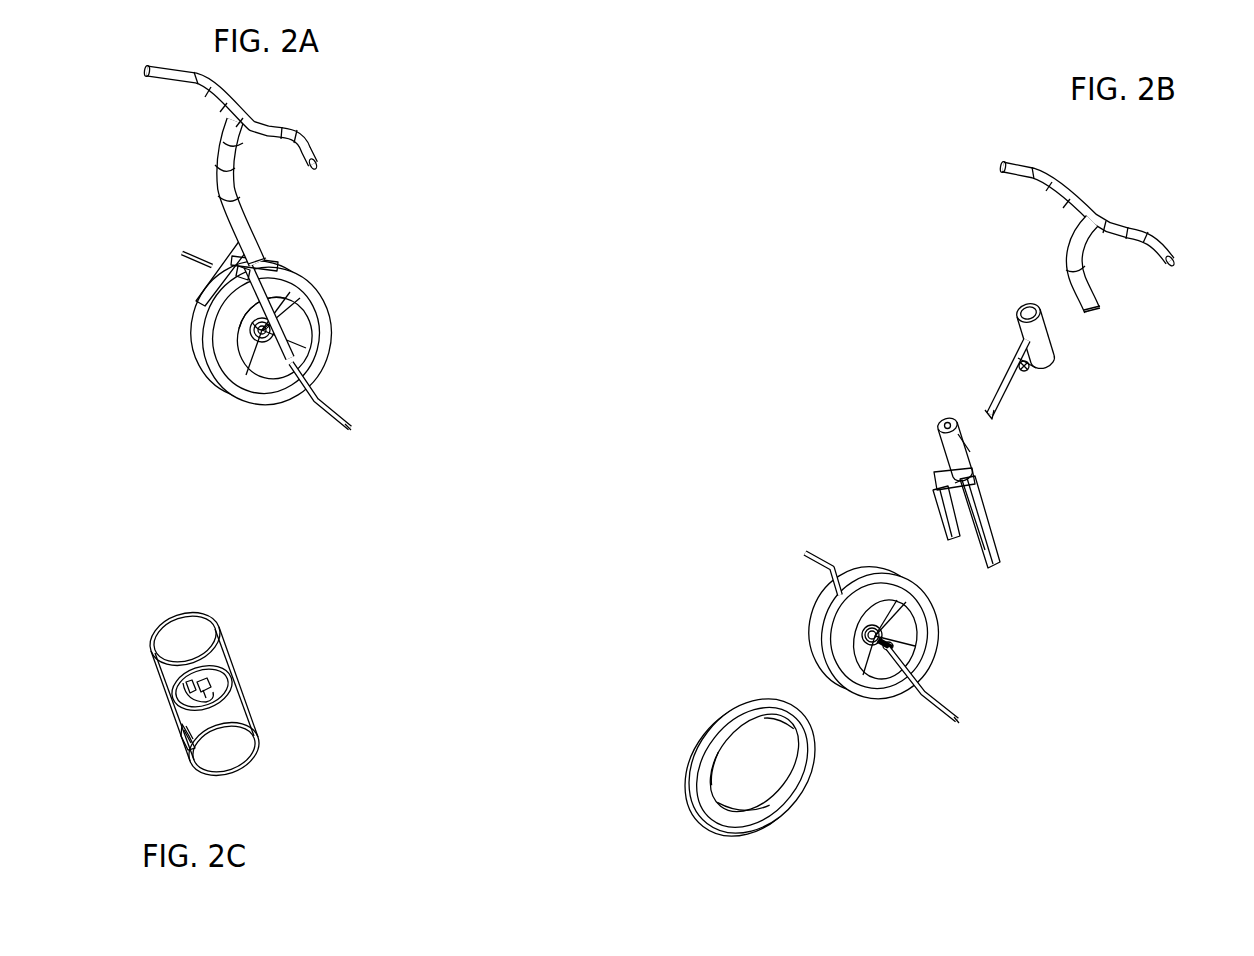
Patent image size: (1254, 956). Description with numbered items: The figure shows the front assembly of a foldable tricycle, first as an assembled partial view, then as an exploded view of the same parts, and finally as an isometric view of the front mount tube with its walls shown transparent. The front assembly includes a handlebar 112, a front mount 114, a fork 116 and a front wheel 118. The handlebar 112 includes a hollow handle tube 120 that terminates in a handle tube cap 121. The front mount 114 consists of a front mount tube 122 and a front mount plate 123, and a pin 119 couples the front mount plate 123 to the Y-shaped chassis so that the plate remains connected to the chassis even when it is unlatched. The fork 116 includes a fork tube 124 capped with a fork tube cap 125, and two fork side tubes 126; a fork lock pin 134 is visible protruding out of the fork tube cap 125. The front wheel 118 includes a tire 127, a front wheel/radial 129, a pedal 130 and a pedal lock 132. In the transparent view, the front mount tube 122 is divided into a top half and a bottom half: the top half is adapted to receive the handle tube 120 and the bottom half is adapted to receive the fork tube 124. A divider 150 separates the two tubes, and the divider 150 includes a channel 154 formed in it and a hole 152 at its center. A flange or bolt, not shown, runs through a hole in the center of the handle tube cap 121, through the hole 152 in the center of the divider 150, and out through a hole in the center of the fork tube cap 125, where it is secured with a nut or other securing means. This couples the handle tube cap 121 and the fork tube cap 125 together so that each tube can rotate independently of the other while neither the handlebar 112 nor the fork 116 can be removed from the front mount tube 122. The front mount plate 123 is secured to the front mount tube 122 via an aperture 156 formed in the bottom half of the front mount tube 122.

In FIG. 2A, the handlebar 112 is at (265, 128).
In FIG. 2B, the handlebar 112 is at (1000, 167).
In FIG. 2A, the front mount 114 is at (247, 223).
In FIG. 2A, the fork 116 is at (307, 300).
In FIG. 2A, the front wheel 118 is at (307, 333).
In FIG. 2B, the pin 119 is at (1015, 362).
In FIG. 2B, the handle tube 120 is at (1070, 260).
In FIG. 2B, the handle tube cap 121 is at (1103, 308).
In FIG. 2B, the front mount tube 122 is at (1017, 327).
In FIG. 2C, the front mount tube 122 is at (212, 705).
In FIG. 2B, the front mount plate 123 is at (1015, 387).
In FIG. 2B, the fork tube 124 is at (955, 442).
In FIG. 2B, the fork tube cap 125 is at (955, 427).
In FIG. 2B, the fork side tubes 126 is at (950, 538).
In FIG. 2B, the tire 127 is at (737, 712).
In FIG. 2B, the front wheel/radial 129 is at (927, 615).
In FIG. 2B, the pedal 130 is at (957, 712).
In FIG. 2B, the pedal lock 132 is at (887, 635).
In FIG. 2B, the fork lock pin 134 is at (940, 415).
In FIG. 2C, the divider 150 is at (215, 682).
In FIG. 2C, the hole 152 is at (210, 688).
In FIG. 2C, the channel 154 is at (197, 713).
In FIG. 2C, the aperture 156 is at (180, 733).